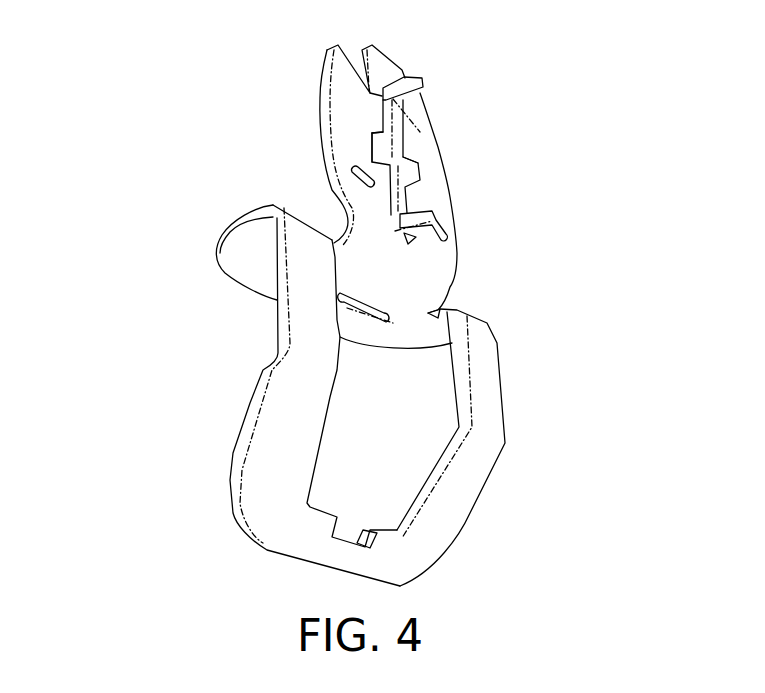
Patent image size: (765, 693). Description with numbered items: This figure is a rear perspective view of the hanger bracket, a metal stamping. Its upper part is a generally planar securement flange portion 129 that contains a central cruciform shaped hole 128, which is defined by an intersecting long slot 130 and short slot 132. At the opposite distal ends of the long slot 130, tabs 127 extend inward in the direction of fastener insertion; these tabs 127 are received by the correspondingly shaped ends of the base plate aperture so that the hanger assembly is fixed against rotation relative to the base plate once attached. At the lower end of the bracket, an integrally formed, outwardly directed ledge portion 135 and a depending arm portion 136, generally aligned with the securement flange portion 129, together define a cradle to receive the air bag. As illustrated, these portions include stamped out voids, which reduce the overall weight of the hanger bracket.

The tabs 127 is at (413, 76).
The central cruciform shaped hole 128 is at (379, 147).
The securement flange portion 129 is at (457, 253).
The long slot 130 is at (398, 131).
The short slot 132 is at (396, 171).
The ledge portion 135 is at (243, 217).
The depending arm portion 136 is at (298, 378).